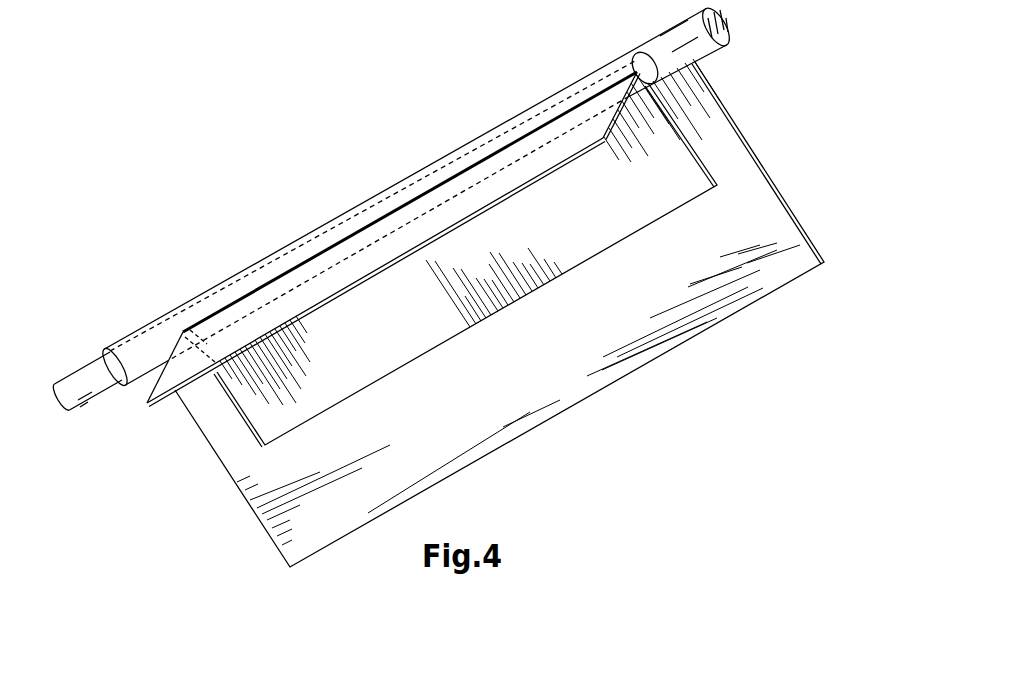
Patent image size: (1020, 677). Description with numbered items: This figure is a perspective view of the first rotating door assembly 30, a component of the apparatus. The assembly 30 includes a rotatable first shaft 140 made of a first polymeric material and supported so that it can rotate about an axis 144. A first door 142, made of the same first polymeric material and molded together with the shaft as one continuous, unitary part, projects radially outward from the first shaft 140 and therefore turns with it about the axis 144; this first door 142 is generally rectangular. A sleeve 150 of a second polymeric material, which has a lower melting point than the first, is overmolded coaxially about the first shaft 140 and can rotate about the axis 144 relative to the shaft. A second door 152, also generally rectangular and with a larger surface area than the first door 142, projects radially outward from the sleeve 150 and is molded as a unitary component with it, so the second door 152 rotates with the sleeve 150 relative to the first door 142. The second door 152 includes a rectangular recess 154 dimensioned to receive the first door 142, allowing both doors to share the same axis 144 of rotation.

The first rotating door assembly 30 is at (203, 253).
The first shaft 140 is at (98, 383).
The first door 142 is at (247, 330).
The axis 144 is at (733, 13).
The sleeve 150 is at (150, 343).
The second door 152 is at (237, 440).
The rectangular recess 154 is at (602, 223).